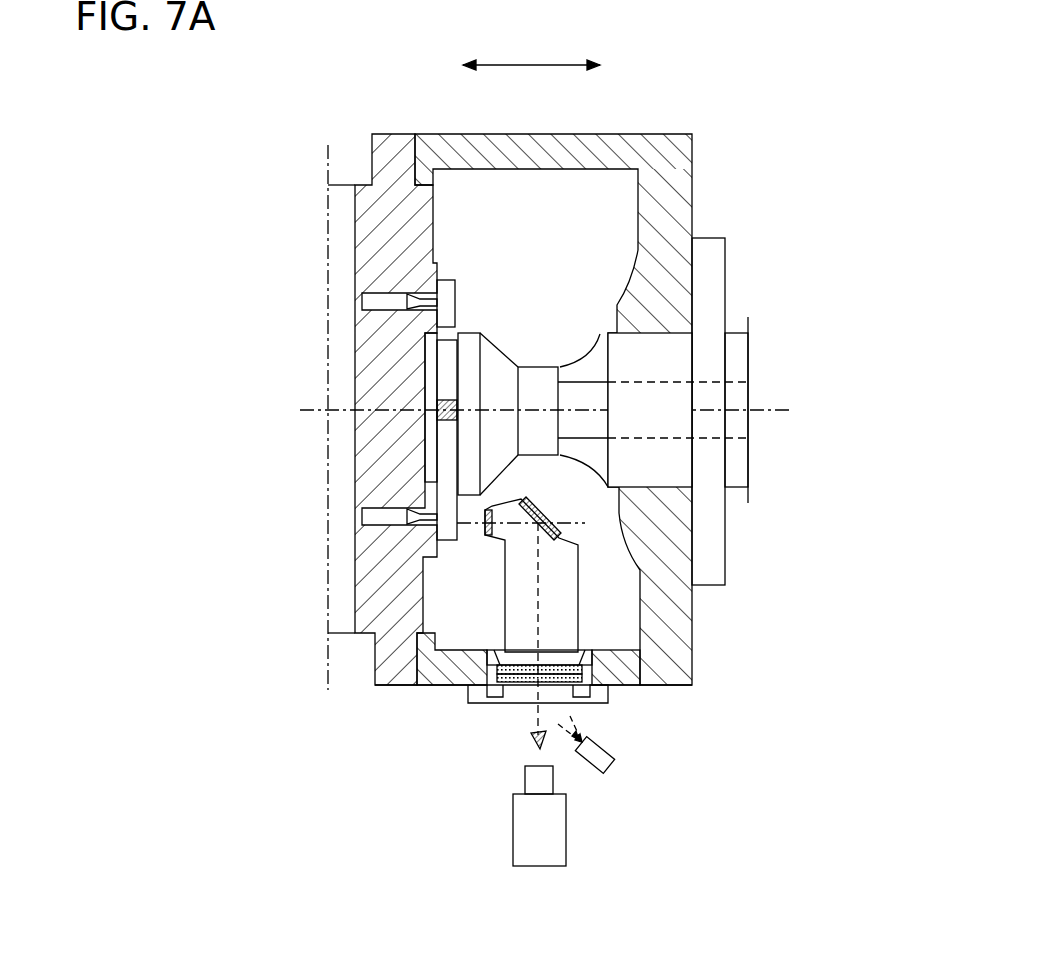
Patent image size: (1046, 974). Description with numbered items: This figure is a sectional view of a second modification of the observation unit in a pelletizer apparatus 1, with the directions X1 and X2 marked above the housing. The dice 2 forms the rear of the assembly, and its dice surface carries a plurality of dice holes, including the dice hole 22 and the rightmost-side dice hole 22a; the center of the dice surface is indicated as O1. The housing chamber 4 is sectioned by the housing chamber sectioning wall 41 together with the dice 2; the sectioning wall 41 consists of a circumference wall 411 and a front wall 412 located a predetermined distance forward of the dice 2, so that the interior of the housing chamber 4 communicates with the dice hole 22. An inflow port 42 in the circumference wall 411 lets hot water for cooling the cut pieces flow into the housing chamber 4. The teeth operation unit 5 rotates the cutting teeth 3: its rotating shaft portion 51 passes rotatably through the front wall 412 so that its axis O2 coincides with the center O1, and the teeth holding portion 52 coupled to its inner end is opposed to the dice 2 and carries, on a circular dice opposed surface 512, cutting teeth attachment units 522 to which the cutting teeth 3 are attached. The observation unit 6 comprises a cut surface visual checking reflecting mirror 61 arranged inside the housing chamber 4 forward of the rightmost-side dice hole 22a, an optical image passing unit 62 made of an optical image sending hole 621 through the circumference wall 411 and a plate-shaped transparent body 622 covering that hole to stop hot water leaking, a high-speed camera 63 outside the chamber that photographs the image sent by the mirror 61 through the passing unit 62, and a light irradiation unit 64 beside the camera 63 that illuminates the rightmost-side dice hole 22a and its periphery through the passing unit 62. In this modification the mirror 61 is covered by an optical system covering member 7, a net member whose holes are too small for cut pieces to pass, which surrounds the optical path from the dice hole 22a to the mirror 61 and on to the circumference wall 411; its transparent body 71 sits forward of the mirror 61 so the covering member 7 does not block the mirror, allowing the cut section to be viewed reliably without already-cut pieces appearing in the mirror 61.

The pelletizer apparatus 1 is at (714, 118).
The dice 2 is at (388, 134).
The dice hole 22 is at (423, 296).
The rightmost-side dice hole 22a is at (433, 528).
The cutting teeth 3 is at (452, 262).
The housing chamber 4 is at (620, 213).
The housing chamber sectioning wall 41 is at (635, 680).
The circumference wall 411 is at (660, 688).
The front wall 412 is at (695, 651).
The inflow port 42 is at (717, 413).
The teeth operation unit 5 is at (653, 358).
The rotating shaft portion 51 is at (612, 330).
The dice opposed surface 512 is at (457, 447).
The teeth holding portion 52 is at (500, 345).
The cutting teeth attachment unit 522 is at (482, 331).
The observation unit 6 is at (491, 701).
The cut surface visual checking reflecting mirror 61 is at (507, 538).
The optical image passing unit 62 is at (467, 745).
The optical image sending hole 621 is at (520, 688).
The transparent body 622 is at (528, 688).
The camera 63 is at (513, 850).
The light irradiation unit 64 is at (600, 775).
The optical system covering member 7 is at (580, 613).
The transparent body 71 is at (500, 520).
The center of the dice surface O1 is at (336, 414).
The axis of the rotating shaft portion O2 is at (772, 430).
The direction X1 is at (615, 68).
The direction X2 is at (511, 68).